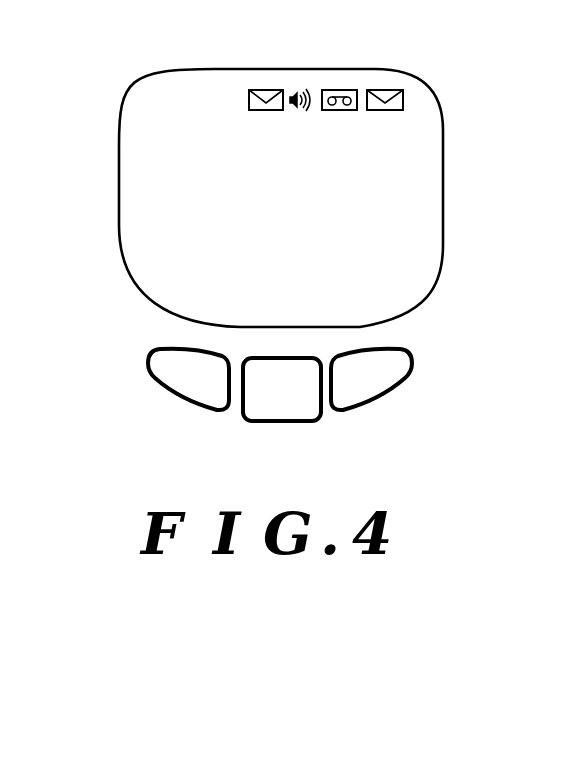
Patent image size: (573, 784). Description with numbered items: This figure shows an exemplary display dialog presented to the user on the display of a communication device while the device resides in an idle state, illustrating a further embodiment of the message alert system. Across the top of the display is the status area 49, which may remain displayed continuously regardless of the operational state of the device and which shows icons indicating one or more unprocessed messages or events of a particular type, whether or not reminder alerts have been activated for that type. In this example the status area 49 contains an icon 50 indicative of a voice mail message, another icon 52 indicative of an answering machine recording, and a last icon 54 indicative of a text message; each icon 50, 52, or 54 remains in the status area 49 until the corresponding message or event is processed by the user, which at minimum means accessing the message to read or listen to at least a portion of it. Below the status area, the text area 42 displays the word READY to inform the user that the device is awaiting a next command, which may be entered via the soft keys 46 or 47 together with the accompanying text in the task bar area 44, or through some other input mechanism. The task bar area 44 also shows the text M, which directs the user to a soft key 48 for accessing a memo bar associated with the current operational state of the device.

The text area 42 is at (108, 95).
The task bar area 44 is at (446, 302).
The soft key 46 is at (192, 383).
The soft key 47 is at (375, 388).
The soft key 48 is at (280, 393).
The status area 49 is at (439, 69).
The icon 50 is at (263, 89).
The icon 52 is at (336, 89).
The icon 54 is at (385, 89).